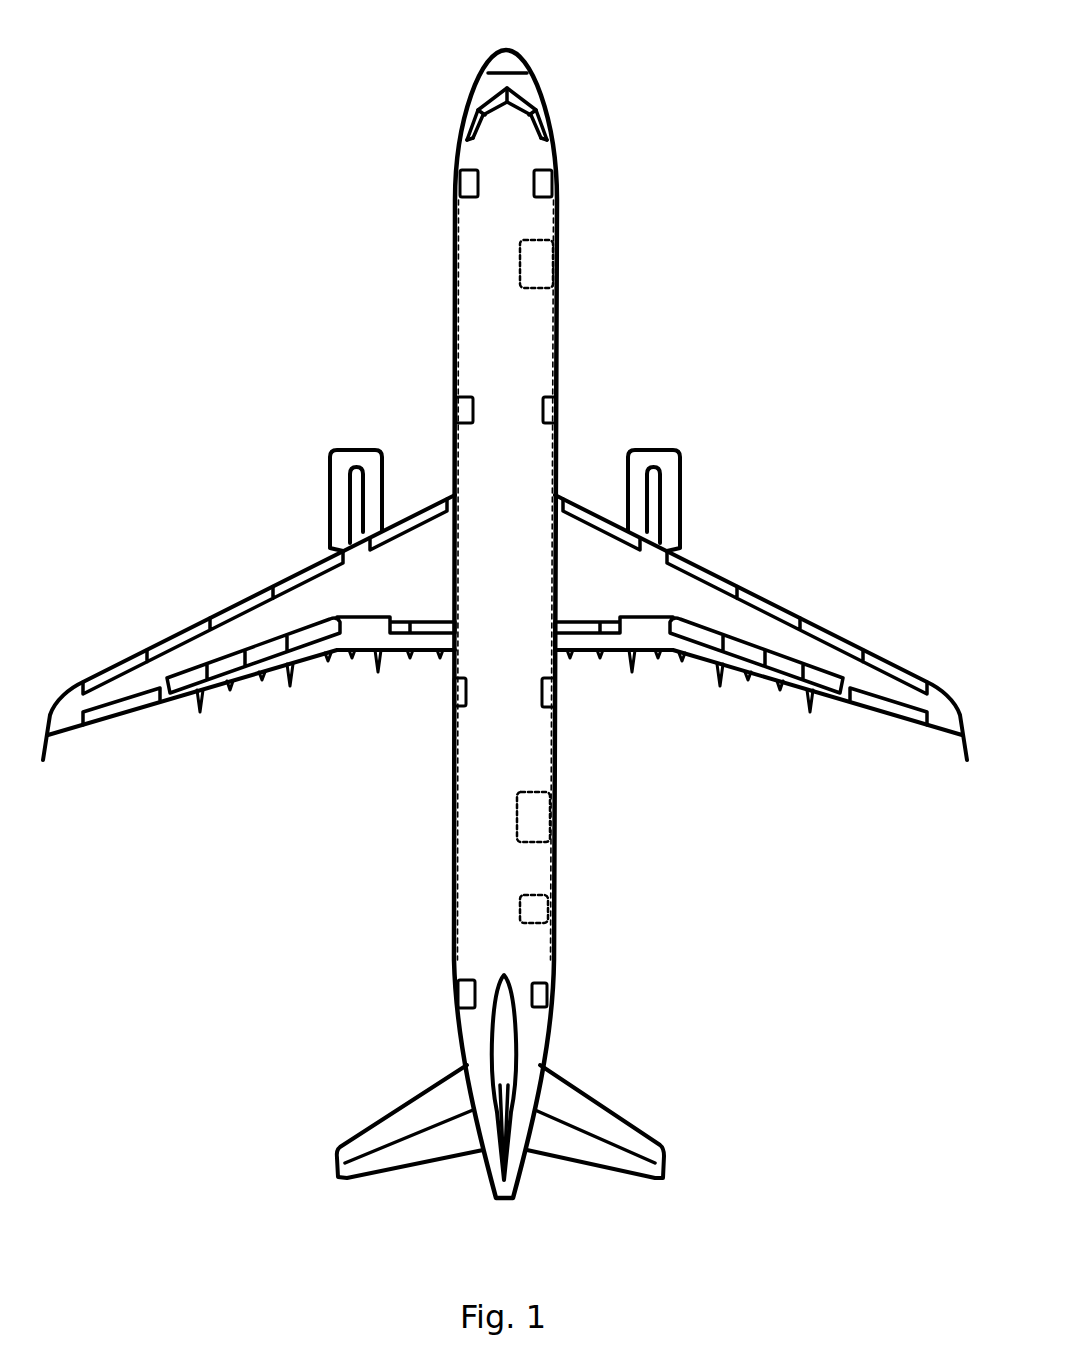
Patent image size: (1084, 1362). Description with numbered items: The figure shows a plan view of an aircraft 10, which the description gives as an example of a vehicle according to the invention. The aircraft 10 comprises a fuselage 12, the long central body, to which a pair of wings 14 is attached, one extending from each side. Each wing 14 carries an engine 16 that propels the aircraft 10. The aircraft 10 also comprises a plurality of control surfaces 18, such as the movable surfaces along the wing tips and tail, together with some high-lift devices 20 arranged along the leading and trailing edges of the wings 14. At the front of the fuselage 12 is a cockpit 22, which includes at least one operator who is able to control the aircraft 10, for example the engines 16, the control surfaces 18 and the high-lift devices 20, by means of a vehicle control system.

The aircraft 10 is at (381, 291).
The fuselage 12 is at (455, 390).
The wing 14 is at (234, 592).
The engine 16 is at (333, 472).
The control surface 18 is at (130, 704).
The high-lift device 20 is at (167, 643).
The cockpit 22 is at (562, 112).